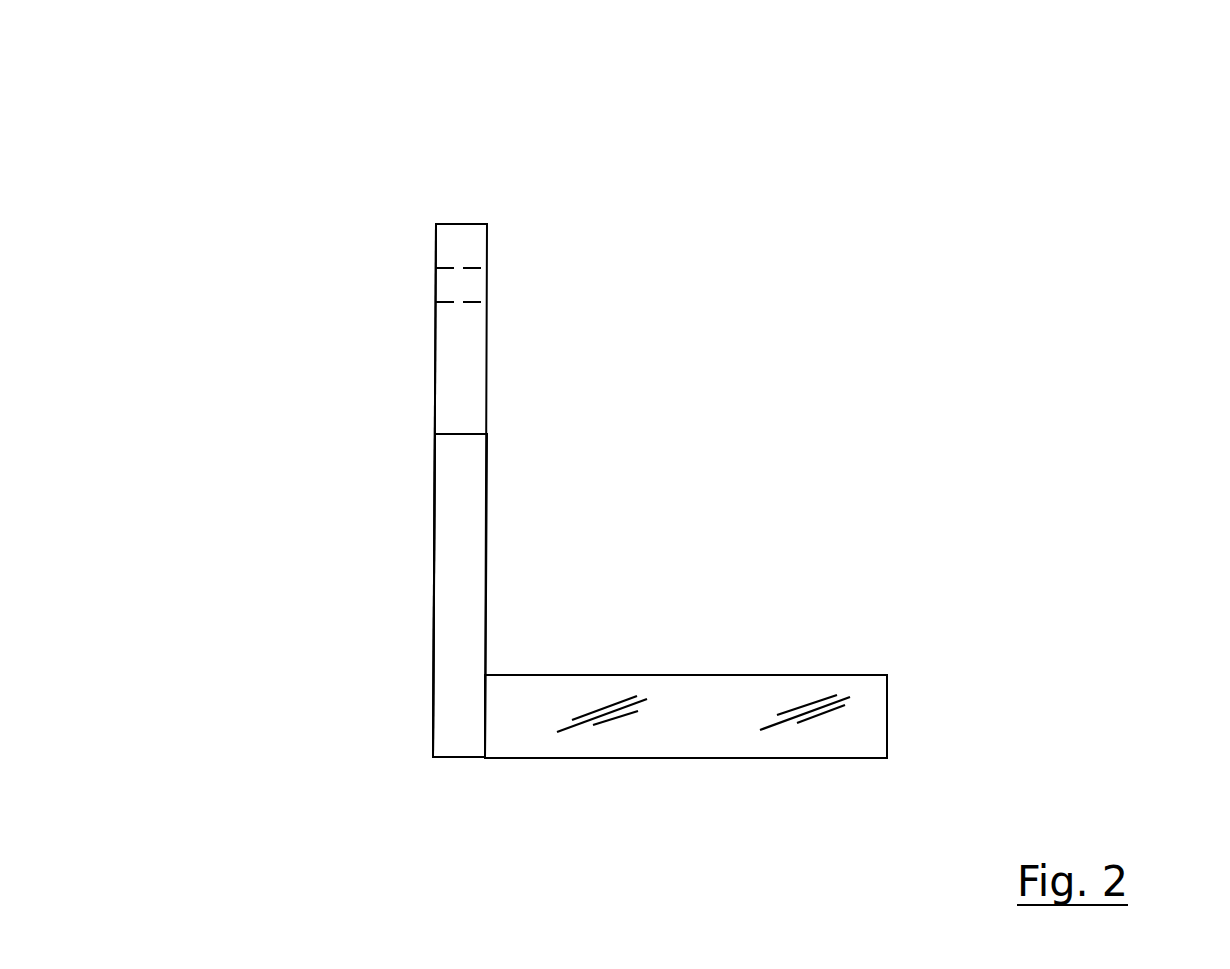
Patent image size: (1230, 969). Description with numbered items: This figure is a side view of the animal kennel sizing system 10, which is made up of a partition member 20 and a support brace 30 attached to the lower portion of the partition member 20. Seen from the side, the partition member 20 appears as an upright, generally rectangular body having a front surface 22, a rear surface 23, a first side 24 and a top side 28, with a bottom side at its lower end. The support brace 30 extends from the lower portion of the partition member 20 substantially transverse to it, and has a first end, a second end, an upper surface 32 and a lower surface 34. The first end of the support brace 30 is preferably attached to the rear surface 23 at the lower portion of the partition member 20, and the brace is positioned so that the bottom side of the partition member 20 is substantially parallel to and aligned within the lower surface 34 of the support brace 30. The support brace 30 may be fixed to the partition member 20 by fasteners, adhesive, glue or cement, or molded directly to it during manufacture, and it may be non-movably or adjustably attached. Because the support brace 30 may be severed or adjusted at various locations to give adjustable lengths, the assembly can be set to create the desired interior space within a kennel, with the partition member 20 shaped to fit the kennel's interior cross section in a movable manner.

The animal kennel sizing system 10 is at (879, 222).
The partition member 20 is at (432, 215).
The front surface 22 is at (433, 493).
The rear surface 23 is at (487, 398).
The first side 24 is at (460, 625).
The top side 28 is at (463, 225).
The support brace 30 is at (892, 668).
The upper surface 32 is at (628, 673).
The lower surface 34 is at (733, 760).